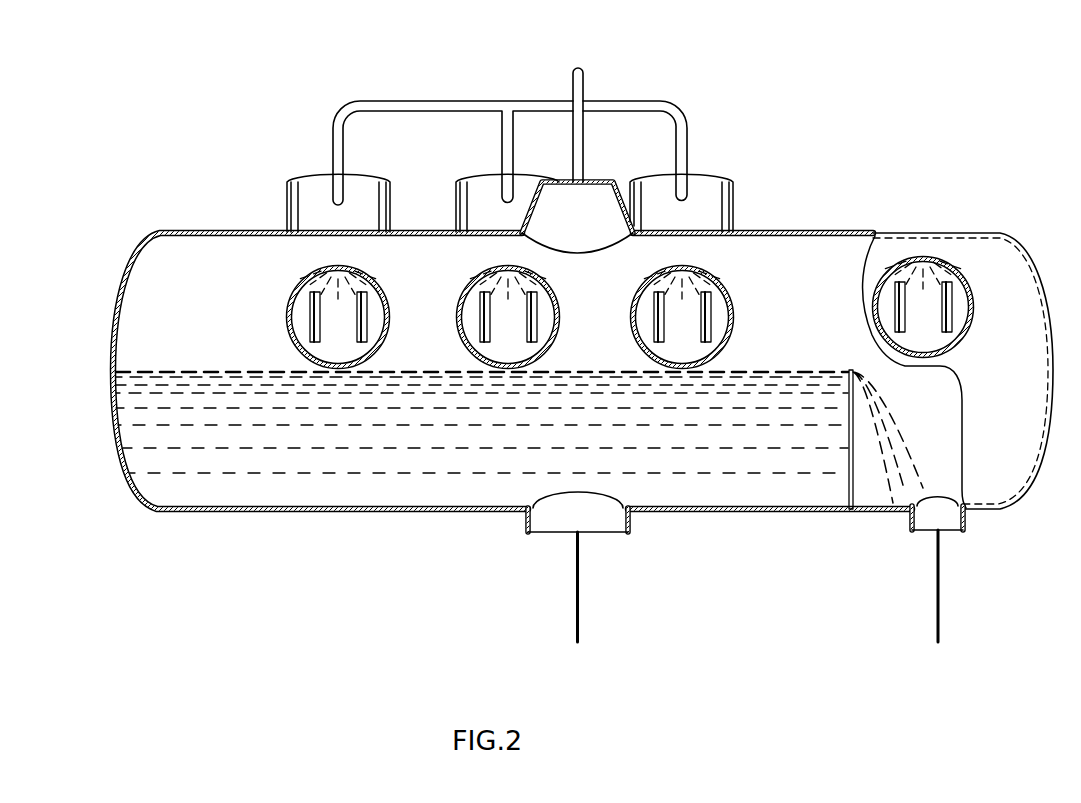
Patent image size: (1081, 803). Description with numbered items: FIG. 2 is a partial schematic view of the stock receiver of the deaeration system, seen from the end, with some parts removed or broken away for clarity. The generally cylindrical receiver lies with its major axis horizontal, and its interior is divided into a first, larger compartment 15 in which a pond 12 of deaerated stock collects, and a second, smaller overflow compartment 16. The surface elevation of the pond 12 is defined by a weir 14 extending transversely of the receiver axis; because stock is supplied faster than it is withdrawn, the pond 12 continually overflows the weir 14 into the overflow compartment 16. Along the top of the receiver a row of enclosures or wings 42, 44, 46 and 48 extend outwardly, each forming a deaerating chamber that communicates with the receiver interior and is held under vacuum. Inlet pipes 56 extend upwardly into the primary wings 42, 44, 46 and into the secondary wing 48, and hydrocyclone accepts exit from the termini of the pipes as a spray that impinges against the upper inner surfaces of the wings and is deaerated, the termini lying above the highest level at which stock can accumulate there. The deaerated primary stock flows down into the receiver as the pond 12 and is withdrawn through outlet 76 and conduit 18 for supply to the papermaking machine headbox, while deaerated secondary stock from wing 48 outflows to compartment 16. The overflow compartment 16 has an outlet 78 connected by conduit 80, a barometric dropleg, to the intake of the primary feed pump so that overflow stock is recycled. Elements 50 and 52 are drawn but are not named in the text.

The pond 12 is at (531, 434).
The weir 14 is at (849, 485).
The first compartment 15 is at (220, 344).
The overflow compartment 16 is at (936, 434).
The conduit 18 is at (578, 607).
The primary wing 42 is at (287, 193).
The primary wing 44 is at (457, 190).
The primary wing 46 is at (733, 191).
The secondary wing 48 is at (968, 283).
The inlet pipe 50 is at (583, 143).
The branch pipes 52 is at (332, 132).
The inlet pipe 56 is at (631, 312).
The outlet 76 is at (528, 530).
The outlet 78 is at (963, 529).
The conduit 80 is at (940, 604).